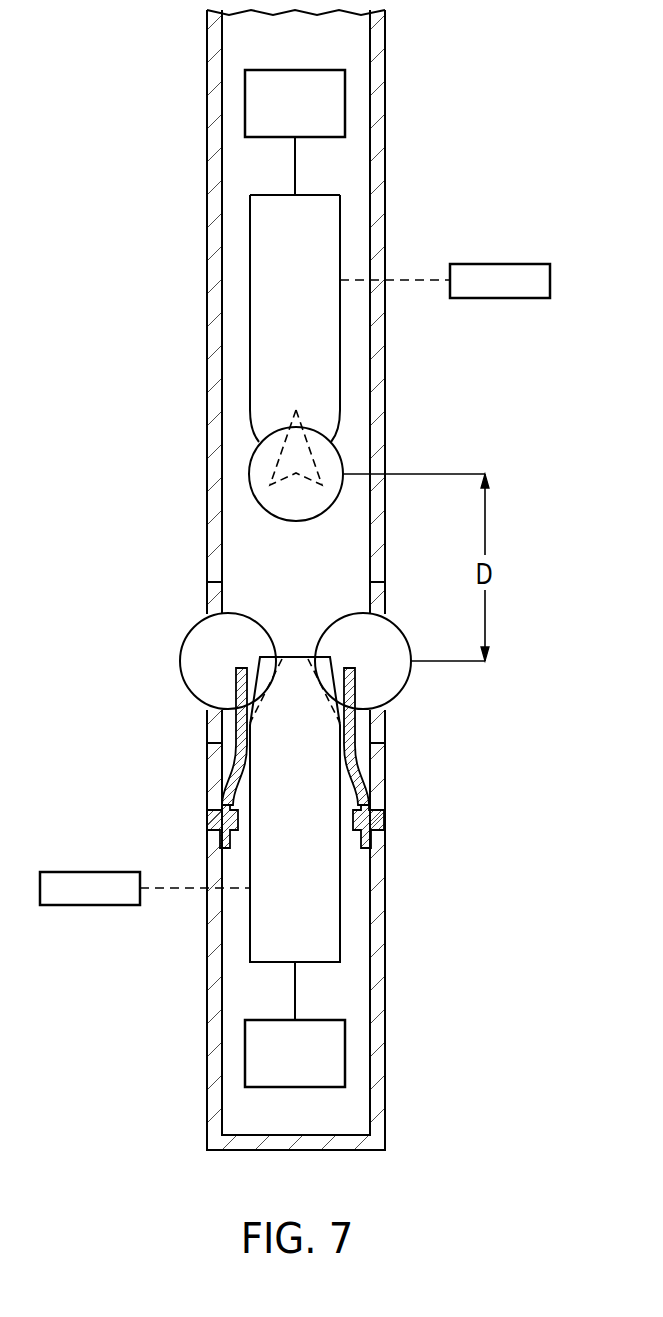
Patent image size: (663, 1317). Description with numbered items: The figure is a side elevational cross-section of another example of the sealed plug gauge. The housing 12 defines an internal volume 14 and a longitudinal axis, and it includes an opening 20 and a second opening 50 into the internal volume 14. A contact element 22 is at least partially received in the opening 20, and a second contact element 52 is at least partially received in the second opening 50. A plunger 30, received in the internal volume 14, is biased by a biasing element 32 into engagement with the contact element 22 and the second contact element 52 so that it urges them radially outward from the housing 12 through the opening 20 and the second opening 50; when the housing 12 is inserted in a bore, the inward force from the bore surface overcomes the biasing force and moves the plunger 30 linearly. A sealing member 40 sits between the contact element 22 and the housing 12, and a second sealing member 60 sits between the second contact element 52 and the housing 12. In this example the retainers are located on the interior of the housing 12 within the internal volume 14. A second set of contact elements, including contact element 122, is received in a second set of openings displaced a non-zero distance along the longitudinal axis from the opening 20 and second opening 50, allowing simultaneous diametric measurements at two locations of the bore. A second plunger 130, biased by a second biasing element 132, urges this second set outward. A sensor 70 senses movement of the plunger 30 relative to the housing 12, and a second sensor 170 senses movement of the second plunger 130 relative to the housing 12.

The housing 12 is at (385, 70).
The internal volume 14 is at (340, 182).
The opening 20 is at (385, 590).
The contact element 22 is at (410, 680).
The plunger 30 is at (330, 886).
The biasing element 32 is at (245, 1055).
The sealing member 40 is at (385, 603).
The second opening 50 is at (207, 588).
The second contact element 52 is at (182, 680).
The second sealing member 60 is at (207, 603).
The sensor 70 is at (88, 872).
The contact element of the second set of contact elements 122 is at (248, 474).
The second plunger 130 is at (255, 252).
The second biasing element 132 is at (245, 107).
The second sensor 170 is at (500, 264).